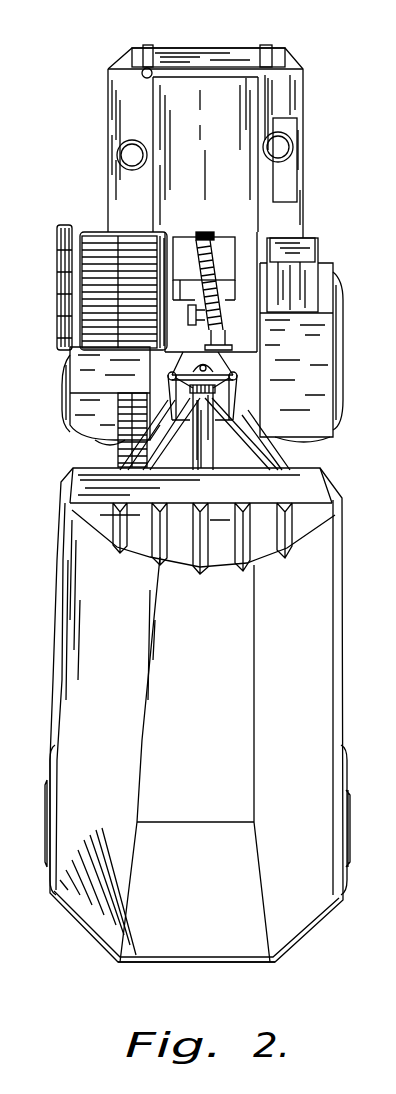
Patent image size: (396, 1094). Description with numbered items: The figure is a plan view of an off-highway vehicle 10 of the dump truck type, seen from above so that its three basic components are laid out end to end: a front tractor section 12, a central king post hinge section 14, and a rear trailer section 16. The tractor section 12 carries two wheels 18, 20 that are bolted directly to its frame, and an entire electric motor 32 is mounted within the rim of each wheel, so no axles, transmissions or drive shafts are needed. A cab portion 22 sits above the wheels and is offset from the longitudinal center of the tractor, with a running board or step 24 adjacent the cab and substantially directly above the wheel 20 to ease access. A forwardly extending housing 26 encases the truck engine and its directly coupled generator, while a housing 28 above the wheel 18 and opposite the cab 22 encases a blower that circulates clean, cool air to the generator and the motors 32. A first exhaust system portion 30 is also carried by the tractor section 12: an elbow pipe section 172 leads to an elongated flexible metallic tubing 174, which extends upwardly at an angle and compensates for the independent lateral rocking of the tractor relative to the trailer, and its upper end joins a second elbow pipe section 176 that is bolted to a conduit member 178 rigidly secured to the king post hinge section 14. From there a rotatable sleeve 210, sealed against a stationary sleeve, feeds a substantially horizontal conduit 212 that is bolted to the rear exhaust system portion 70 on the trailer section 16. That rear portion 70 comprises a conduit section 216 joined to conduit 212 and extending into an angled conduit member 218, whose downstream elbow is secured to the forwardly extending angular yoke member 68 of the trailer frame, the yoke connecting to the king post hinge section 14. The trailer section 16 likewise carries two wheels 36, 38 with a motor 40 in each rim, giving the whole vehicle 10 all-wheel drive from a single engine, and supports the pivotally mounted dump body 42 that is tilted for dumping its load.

The off-highway vehicle 10 is at (329, 345).
The tractor section 12 is at (297, 100).
The king post hinge section 14 is at (226, 380).
The rear trailer section 16 is at (326, 680).
The wheel 18 is at (340, 290).
The wheel 20 is at (67, 408).
The cab portion 22 is at (105, 250).
The step 24 is at (67, 250).
The housing 26 is at (223, 92).
The housing 28 is at (295, 278).
The exhaust system portion 30 is at (193, 240).
The motor 32 is at (341, 365).
The wheel 36 is at (345, 775).
The wheel 38 is at (48, 763).
The motor 40 is at (44, 842).
The dump body 42 is at (216, 662).
The yoke member 68 is at (250, 465).
The exhaust system portion 70 is at (211, 446).
The elbow pipe section 172 is at (218, 248).
The flexible metallic tubing 174 is at (213, 300).
The elbow pipe section 176 is at (207, 325).
The conduit member 178 is at (215, 370).
The rotatable sleeve 210 is at (192, 375).
The conduit 212 is at (190, 393).
The conduit section 216 is at (210, 405).
The conduit member 218 is at (198, 462).